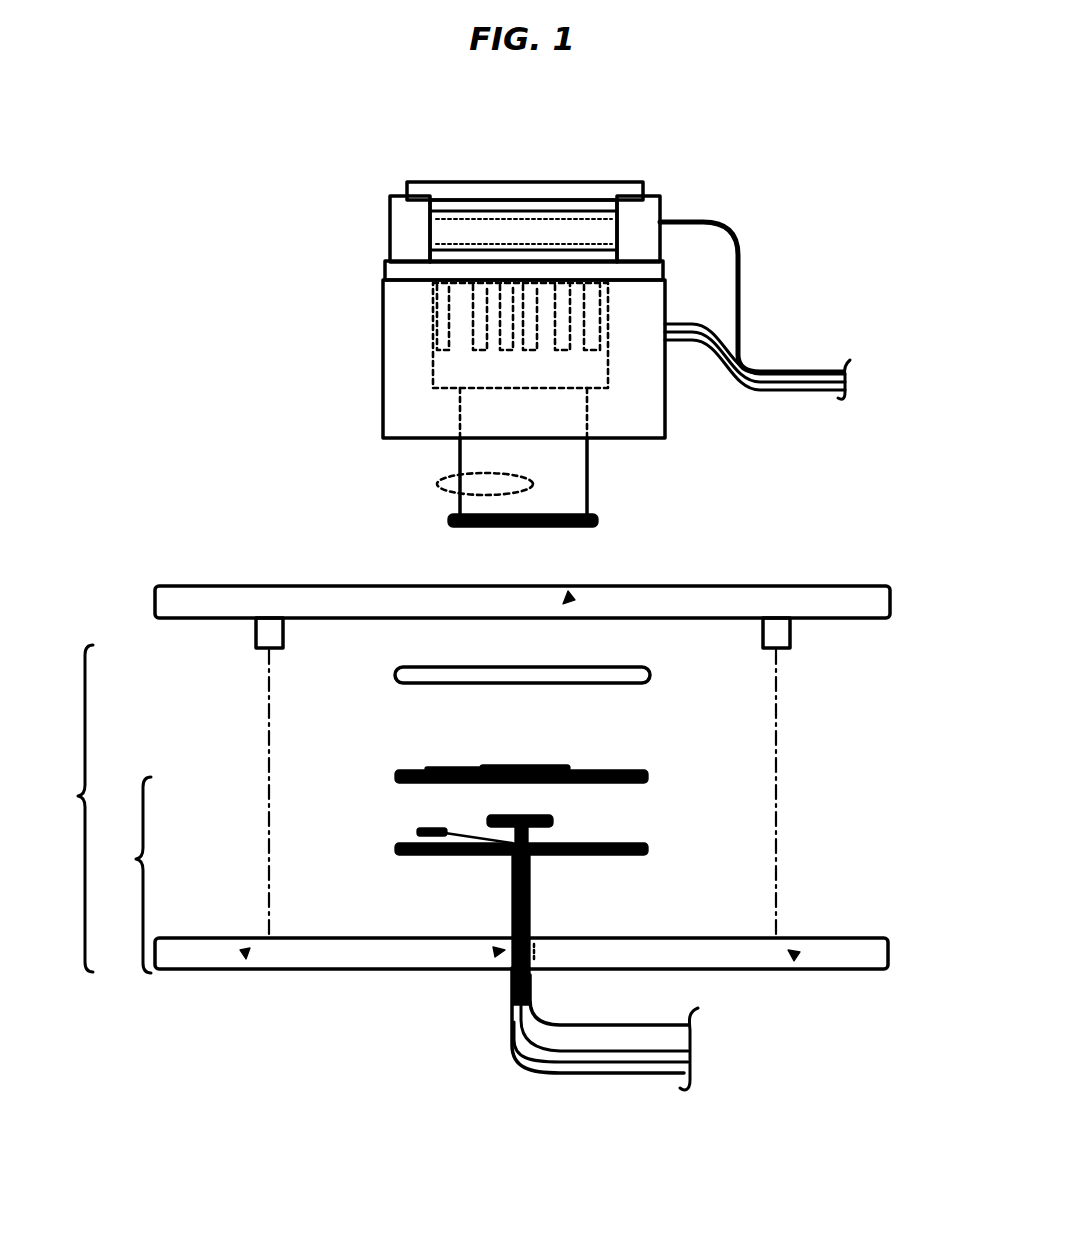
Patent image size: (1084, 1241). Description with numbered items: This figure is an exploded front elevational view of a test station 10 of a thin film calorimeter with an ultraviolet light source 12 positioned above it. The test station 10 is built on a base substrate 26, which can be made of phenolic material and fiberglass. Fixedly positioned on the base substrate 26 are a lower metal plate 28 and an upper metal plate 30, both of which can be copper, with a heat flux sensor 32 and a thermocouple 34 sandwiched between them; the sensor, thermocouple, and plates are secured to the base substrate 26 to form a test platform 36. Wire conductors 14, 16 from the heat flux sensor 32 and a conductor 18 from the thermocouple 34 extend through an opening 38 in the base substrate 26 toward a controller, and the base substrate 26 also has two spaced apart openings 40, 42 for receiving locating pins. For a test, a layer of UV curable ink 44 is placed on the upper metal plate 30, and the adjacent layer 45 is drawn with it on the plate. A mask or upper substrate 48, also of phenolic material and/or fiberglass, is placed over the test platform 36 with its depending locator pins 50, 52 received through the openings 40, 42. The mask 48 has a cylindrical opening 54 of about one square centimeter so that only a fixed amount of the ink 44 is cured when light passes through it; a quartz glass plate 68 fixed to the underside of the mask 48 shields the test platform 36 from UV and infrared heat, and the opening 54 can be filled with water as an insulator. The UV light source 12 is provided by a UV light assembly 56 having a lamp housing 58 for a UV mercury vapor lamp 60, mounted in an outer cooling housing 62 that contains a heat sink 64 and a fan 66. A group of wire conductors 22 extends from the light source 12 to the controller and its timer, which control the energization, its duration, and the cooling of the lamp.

The test station 10 is at (66, 808).
The ultraviolet (UV) light source 12 is at (288, 327).
The wire conductor 14 is at (604, 1022).
The wire conductor 16 is at (583, 1062).
The wire conductor 18 is at (512, 902).
The group of wire conductors 22 is at (784, 395).
The base substrate 26 is at (846, 937).
The lower metal plate 28 is at (632, 857).
The upper metal plate 30 is at (617, 770).
The heat flux sensor 32 is at (548, 822).
The thermocouple 34 is at (434, 830).
The test platform 36 is at (127, 875).
The opening 38 is at (495, 954).
The opening 40 is at (244, 961).
The opening 42 is at (796, 963).
The layer of UV curable ink 44 is at (555, 765).
The adhesive layer 45 is at (458, 765).
The mask or upper substrate 48 is at (832, 598).
The locator pin 50 is at (266, 634).
The locator pin 52 is at (790, 629).
The cylindrical opening 54 is at (572, 600).
The UV light assembly 56 is at (372, 368).
The lamp housing 58 is at (590, 474).
The UV mercury vapor lamp 60 is at (444, 475).
The outer cooling housing 62 is at (386, 297).
The heat sink 64 is at (433, 309).
The fan 66 is at (599, 184).
The quartz glass plate 68 is at (411, 669).